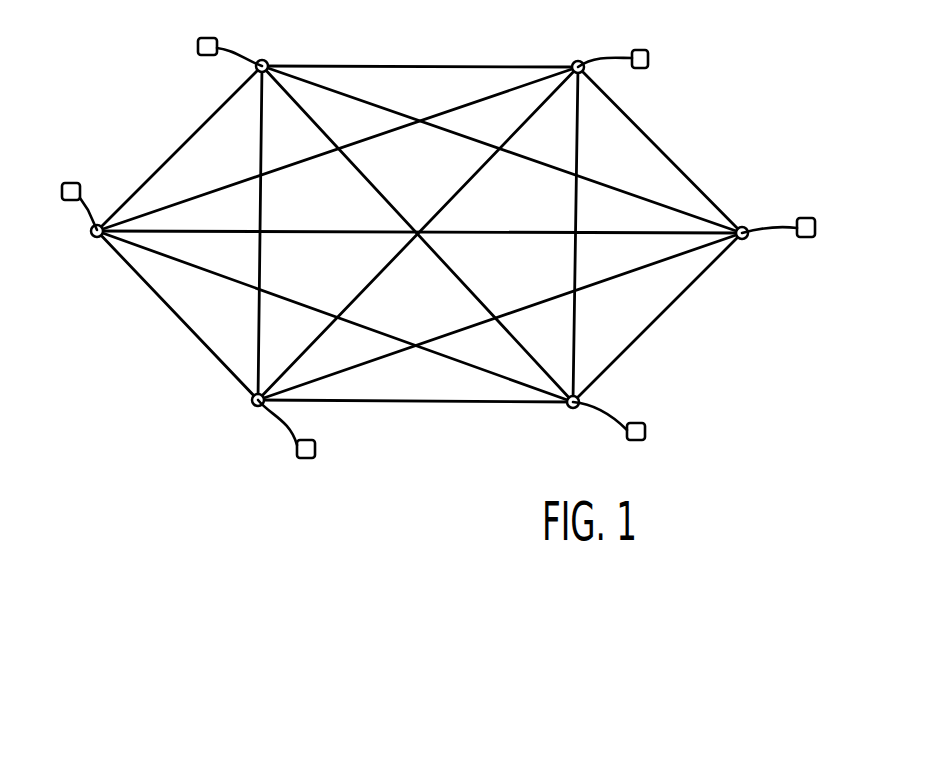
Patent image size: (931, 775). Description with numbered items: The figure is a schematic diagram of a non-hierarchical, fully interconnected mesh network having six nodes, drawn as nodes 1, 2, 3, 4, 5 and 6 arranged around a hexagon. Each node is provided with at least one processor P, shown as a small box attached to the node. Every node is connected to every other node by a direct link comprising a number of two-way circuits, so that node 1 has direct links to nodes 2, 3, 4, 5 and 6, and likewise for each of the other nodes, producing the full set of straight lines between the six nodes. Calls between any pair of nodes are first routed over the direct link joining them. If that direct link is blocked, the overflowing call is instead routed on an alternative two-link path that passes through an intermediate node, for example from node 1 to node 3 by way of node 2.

The node 1 is at (255, 422).
The node 2 is at (570, 425).
The node 3 is at (743, 264).
The node 4 is at (574, 43).
The node 5 is at (276, 43).
The node 6 is at (97, 260).
The processor P is at (204, 38).